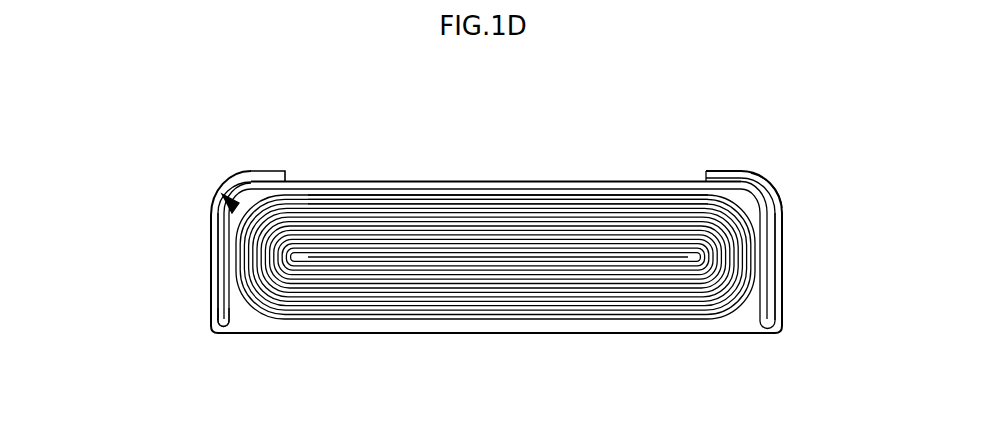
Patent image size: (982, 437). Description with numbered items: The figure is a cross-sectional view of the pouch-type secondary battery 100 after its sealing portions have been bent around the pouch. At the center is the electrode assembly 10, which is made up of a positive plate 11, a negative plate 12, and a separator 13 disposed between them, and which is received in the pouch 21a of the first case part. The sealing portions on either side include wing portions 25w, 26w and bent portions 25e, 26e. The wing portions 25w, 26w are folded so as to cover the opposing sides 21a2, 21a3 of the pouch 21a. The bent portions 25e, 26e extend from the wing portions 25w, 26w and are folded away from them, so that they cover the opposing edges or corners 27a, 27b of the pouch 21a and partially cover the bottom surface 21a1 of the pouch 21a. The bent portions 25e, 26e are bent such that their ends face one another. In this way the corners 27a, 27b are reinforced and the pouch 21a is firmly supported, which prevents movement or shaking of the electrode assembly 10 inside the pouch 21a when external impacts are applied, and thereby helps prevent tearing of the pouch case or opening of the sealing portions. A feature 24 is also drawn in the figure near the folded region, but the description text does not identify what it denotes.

The pouch-type secondary battery 100 is at (72, 85).
The electrode assembly 10 is at (340, 103).
The positive plate 11 is at (345, 186).
The negative plate 12 is at (442, 195).
The separator 13 is at (381, 190).
The pouch 21a is at (232, 330).
The bottom surface of the pouch 21a1 is at (541, 181).
The side of the pouch 21a2 is at (758, 213).
The side of the pouch 21a3 is at (211, 293).
The welding portion 24 is at (218, 190).
The bent portion 25e is at (740, 165).
The wing portion 25w is at (775, 272).
The bent portion 26e is at (218, 188).
The wing portion 26w is at (203, 240).
The corner of the pouch 27a is at (247, 162).
The corner of the pouch 27b is at (773, 186).